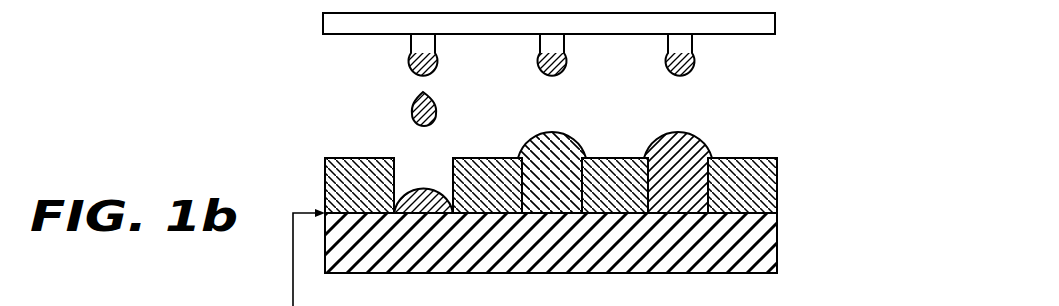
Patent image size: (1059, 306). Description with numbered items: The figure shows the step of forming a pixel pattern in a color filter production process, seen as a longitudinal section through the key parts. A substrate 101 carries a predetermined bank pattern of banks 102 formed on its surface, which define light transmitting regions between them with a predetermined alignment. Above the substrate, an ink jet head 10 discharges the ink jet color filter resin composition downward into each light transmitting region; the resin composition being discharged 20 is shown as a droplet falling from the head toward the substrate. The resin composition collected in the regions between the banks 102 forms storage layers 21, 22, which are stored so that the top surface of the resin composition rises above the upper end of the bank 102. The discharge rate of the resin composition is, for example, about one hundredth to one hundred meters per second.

The ink jet head 10 is at (776, 23).
The resin composition being discharged 20 is at (428, 187).
The storage layer 21 is at (560, 135).
The storage layer 22 is at (710, 143).
The substrate 101 is at (777, 247).
The bank 102 is at (777, 197).